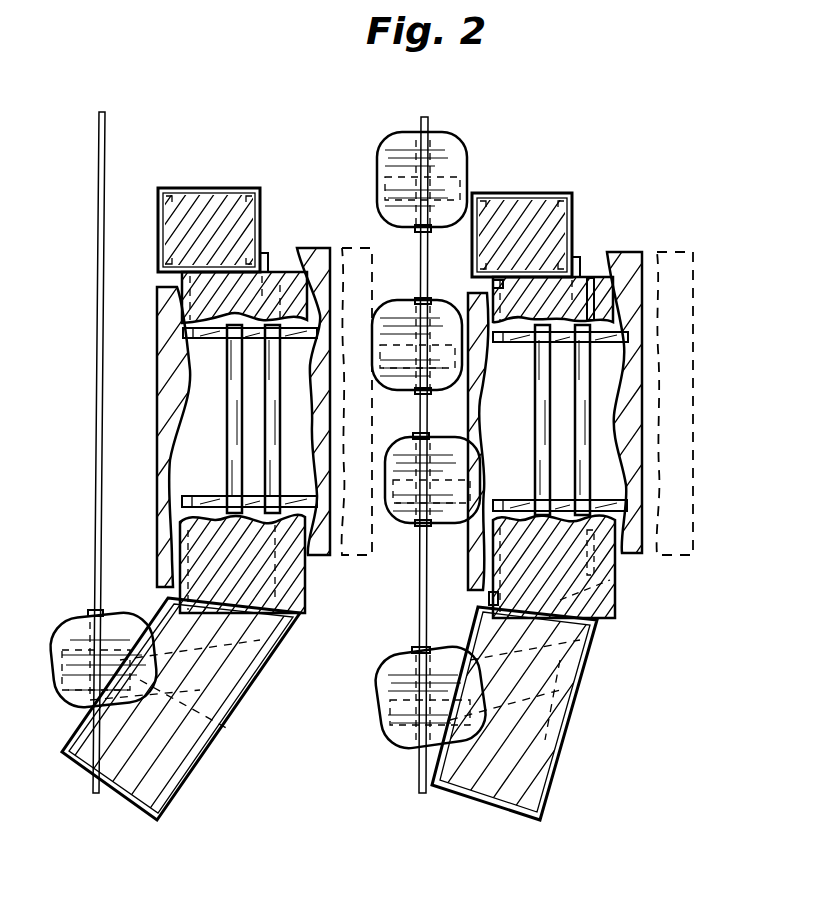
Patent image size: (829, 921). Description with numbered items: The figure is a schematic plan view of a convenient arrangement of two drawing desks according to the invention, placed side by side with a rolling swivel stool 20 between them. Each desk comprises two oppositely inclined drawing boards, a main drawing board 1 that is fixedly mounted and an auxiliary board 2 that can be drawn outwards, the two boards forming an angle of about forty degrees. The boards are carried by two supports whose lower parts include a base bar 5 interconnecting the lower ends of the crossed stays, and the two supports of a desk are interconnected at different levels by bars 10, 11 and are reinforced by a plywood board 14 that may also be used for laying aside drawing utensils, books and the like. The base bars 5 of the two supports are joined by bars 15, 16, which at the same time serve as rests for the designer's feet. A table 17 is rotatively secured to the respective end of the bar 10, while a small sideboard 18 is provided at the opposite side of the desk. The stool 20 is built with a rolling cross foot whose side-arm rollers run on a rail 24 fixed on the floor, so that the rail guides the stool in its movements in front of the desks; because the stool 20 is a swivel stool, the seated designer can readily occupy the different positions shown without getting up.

The main drawing board 1 is at (474, 571).
The auxiliary board 2 is at (314, 256).
The base bar 5 is at (205, 338).
The bar 10 is at (493, 285).
The bar 11 is at (590, 286).
The plywood board 14 is at (298, 594).
The bar 15 is at (233, 438).
The bar 16 is at (272, 440).
The table 17 is at (174, 773).
The small sideboard 18 is at (220, 246).
The rolling swivel stool 20 is at (102, 642).
The rail 24 is at (108, 146).